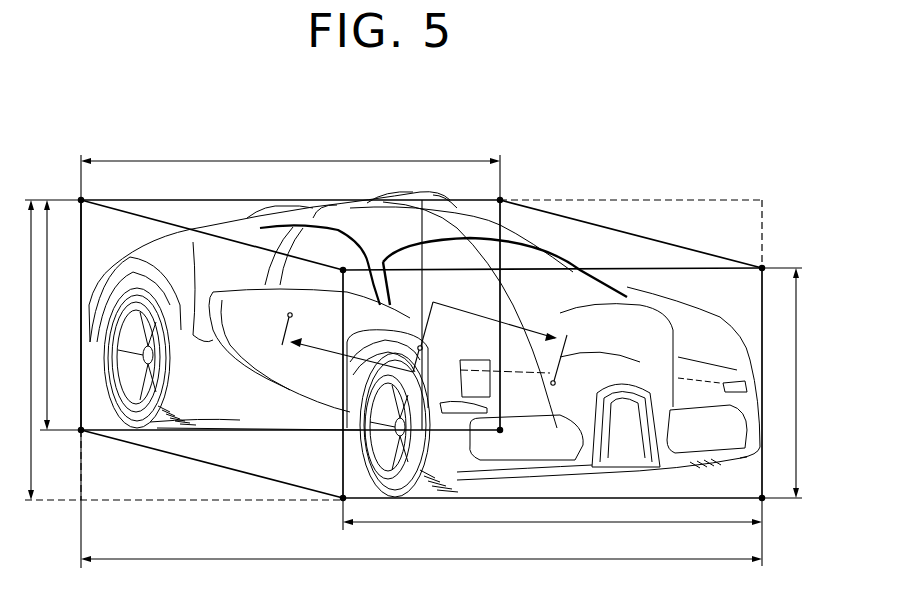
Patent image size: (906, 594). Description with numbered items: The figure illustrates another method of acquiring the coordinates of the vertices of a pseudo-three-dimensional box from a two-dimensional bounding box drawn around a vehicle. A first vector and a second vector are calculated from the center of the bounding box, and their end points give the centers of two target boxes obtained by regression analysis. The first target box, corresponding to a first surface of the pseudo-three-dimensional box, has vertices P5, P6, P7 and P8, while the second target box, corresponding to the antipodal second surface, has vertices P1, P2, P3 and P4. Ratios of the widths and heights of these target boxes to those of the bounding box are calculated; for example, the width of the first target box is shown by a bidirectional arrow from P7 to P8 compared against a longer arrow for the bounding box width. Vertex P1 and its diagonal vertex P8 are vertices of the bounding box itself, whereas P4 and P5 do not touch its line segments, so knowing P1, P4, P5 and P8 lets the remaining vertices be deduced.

The vertex of the second target 2D box P1 is at (70, 192).
The vertex of the second target 2D box P2 is at (509, 192).
The vertex of the second target 2D box P3 is at (68, 441).
The vertex of the second target 2D box P4 is at (510, 441).
The vertex of the first target 2D box P5 is at (339, 260).
The vertex of the first target 2D box P6 is at (772, 257).
The vertex of the first target 2D box P7 is at (331, 509).
The vertex of the first target 2D box P8 is at (772, 509).